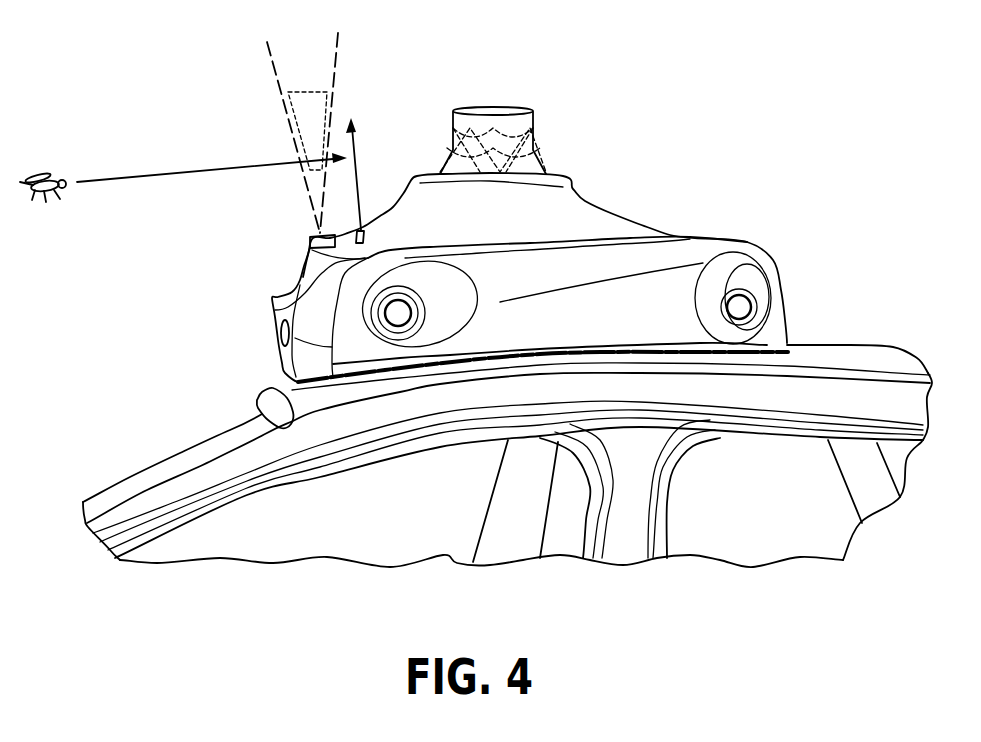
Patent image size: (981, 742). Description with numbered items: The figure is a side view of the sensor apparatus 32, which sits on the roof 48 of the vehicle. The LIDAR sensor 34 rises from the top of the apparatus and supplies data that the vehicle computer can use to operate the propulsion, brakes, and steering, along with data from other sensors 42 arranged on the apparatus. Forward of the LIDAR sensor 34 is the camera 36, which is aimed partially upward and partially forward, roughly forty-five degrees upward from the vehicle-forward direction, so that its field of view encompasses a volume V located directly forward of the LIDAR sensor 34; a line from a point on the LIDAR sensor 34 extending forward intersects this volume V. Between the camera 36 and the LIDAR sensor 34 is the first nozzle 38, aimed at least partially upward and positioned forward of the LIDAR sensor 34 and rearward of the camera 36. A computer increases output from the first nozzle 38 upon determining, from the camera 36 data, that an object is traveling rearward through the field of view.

The sensor apparatus 32 is at (713, 170).
The LIDAR sensor 34 is at (515, 125).
The camera 36 is at (310, 237).
The first nozzle 38 is at (355, 228).
The other sensors 42 is at (387, 308).
The roof 48 is at (847, 340).
The volume V is at (310, 107).